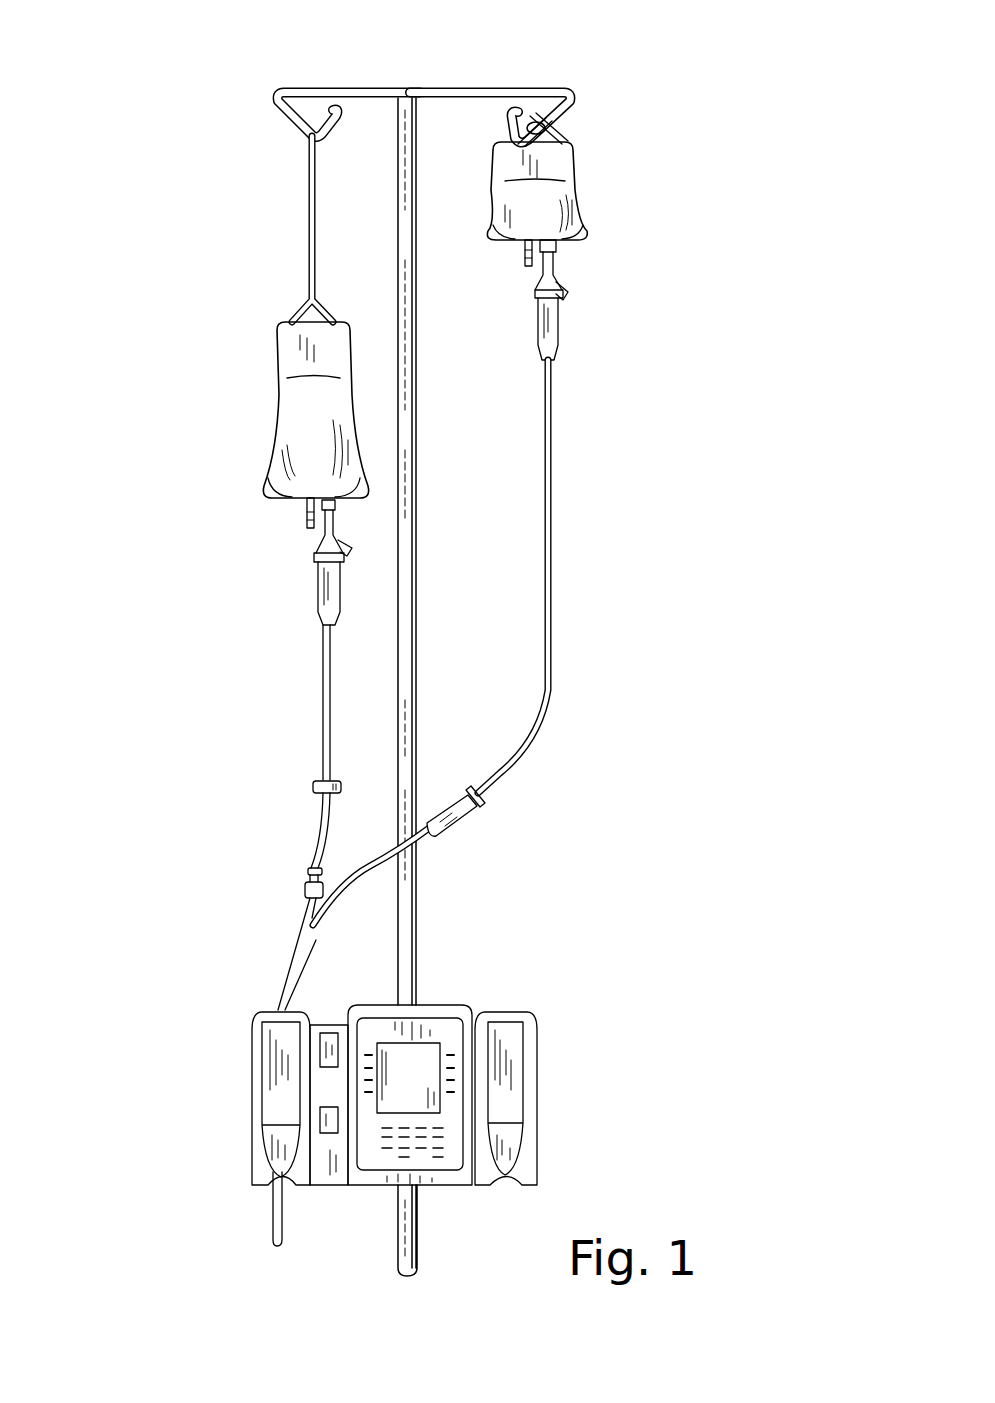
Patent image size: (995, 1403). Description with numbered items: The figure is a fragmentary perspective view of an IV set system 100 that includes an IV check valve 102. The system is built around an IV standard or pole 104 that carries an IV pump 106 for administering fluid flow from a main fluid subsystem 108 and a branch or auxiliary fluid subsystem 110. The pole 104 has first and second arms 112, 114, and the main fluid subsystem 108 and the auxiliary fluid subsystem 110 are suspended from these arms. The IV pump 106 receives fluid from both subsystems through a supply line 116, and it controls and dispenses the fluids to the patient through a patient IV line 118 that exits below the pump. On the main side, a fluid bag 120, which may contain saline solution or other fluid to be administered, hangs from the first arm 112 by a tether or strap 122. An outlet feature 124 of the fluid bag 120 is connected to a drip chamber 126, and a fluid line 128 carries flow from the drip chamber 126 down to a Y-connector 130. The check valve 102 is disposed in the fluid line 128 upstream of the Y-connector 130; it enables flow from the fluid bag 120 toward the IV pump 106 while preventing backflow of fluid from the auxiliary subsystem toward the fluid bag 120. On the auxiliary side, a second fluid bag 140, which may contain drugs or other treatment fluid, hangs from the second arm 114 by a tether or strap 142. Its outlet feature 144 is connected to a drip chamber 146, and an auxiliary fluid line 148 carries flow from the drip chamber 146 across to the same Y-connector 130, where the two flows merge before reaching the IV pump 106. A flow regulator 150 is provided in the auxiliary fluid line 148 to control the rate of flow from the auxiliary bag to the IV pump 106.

The IV set system 100 is at (187, 124).
The IV check valve 102 is at (313, 786).
The IV standard or pole 104 is at (413, 440).
The IV pump 106 is at (443, 1030).
The main fluid subsystem 108 is at (273, 295).
The branch or auxiliary fluid subsystem 110 is at (592, 127).
The first arm 112 is at (352, 88).
The second arm 114 is at (478, 88).
The supply line 116 is at (291, 968).
The patient IV line 118 is at (275, 1212).
The fluid bag 120 is at (280, 398).
The tether or strap 122 is at (318, 178).
The outlet feature 124 is at (306, 512).
The drip chamber 126 is at (320, 583).
The fluid line 128 is at (323, 690).
The Y-connector 130 is at (304, 893).
The fluid bag 140 is at (578, 205).
The tether or strap 142 is at (524, 122).
The outlet feature 144 is at (557, 250).
The drip chamber 146 is at (557, 330).
The auxiliary fluid line 148 is at (556, 495).
The flow regulator 150 is at (456, 808).